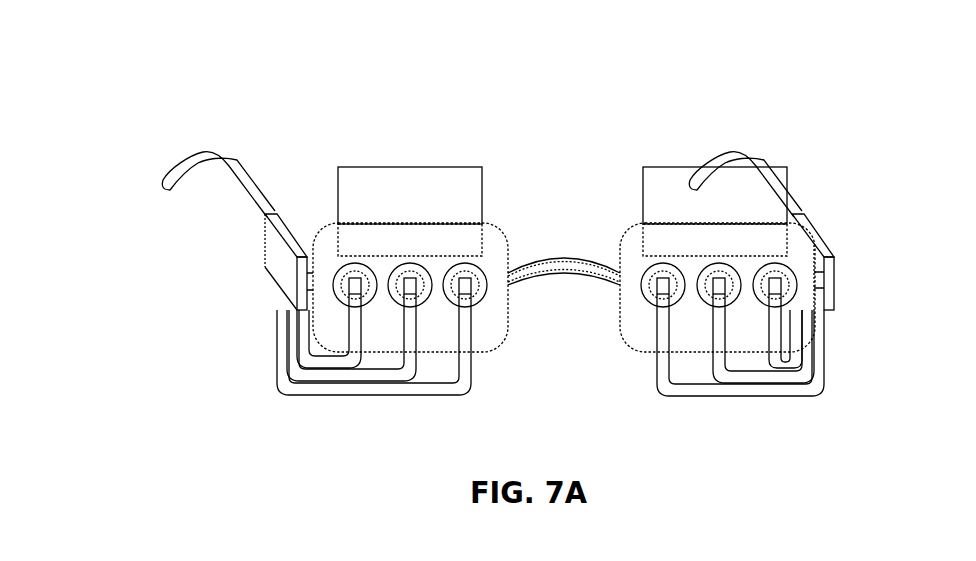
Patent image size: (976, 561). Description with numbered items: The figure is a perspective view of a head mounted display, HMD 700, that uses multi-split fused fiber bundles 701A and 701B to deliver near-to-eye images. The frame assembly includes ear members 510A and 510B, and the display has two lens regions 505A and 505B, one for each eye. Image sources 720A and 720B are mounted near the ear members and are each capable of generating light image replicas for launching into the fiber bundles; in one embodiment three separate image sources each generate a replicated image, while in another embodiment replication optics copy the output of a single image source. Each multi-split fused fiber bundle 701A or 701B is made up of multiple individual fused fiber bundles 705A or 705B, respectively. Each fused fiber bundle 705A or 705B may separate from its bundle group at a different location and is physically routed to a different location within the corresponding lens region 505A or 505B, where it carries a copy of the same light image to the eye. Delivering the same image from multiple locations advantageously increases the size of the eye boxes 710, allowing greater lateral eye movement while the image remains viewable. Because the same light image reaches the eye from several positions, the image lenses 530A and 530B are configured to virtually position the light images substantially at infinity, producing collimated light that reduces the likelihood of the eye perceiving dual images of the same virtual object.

The HMD 700 is at (511, 235).
The ear member 510A is at (180, 173).
The ear member 510B is at (740, 158).
The eye box 710 is at (372, 167).
The image source 720A is at (278, 260).
The image source 720B is at (833, 285).
The image lens 530A is at (478, 282).
The image lens 530B is at (650, 280).
The lens region 505A is at (506, 349).
The lens region 505B is at (620, 306).
The multi-split fused fiber bundle 701A is at (247, 342).
The multi-split fused fiber bundle 701B is at (843, 348).
The fused fiber bundle 705A is at (445, 392).
The fused fiber bundle 705B is at (676, 393).